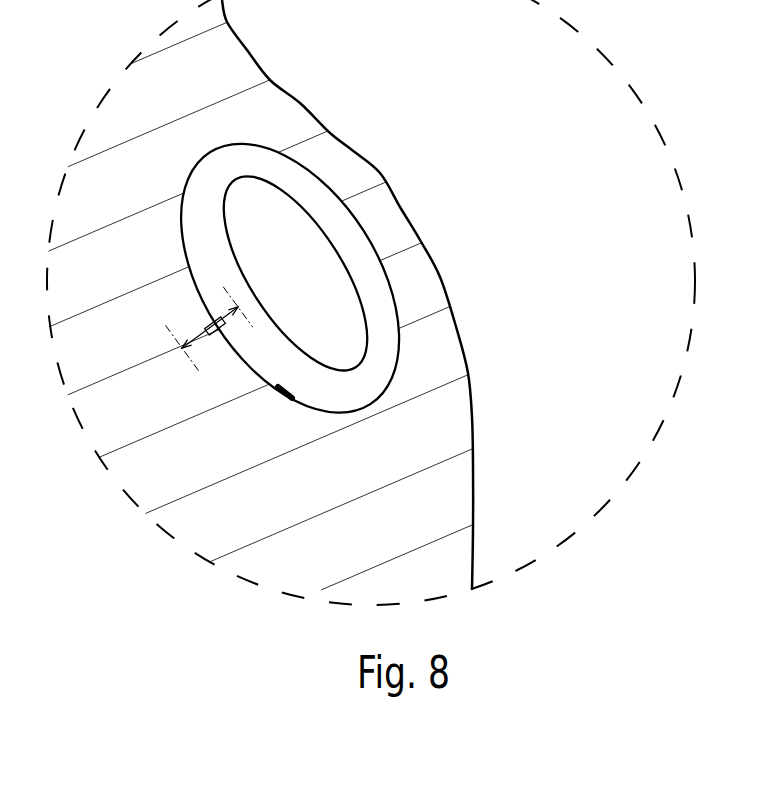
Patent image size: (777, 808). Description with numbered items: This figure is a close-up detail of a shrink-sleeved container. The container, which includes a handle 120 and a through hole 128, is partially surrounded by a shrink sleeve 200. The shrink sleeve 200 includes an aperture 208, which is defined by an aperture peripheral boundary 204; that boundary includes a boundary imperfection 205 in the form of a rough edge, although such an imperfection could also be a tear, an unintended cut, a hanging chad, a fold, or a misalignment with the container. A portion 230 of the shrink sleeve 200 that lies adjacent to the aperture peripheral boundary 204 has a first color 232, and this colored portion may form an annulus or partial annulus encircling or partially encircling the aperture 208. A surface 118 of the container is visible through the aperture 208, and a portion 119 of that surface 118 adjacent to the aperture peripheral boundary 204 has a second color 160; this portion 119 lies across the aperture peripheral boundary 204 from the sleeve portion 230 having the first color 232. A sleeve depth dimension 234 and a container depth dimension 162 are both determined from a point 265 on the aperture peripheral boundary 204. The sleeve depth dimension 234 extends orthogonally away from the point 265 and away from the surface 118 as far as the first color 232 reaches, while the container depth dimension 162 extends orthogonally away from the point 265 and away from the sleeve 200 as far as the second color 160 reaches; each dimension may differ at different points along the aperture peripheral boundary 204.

The surface 118 is at (355, 400).
The portion 119 is at (236, 325).
The handle 120 is at (397, 172).
The through hole 128 is at (303, 272).
The second color 160 is at (232, 328).
The container depth dimension 162 is at (213, 304).
The shrink sleeve 200 is at (460, 517).
The aperture peripheral boundary 204 is at (320, 413).
The boundary imperfection 205 is at (288, 399).
The aperture 208 is at (398, 378).
The portion 230 is at (198, 348).
The first color 232 is at (204, 348).
The sleeve depth dimension 234 is at (185, 345).
The point 265 is at (210, 332).